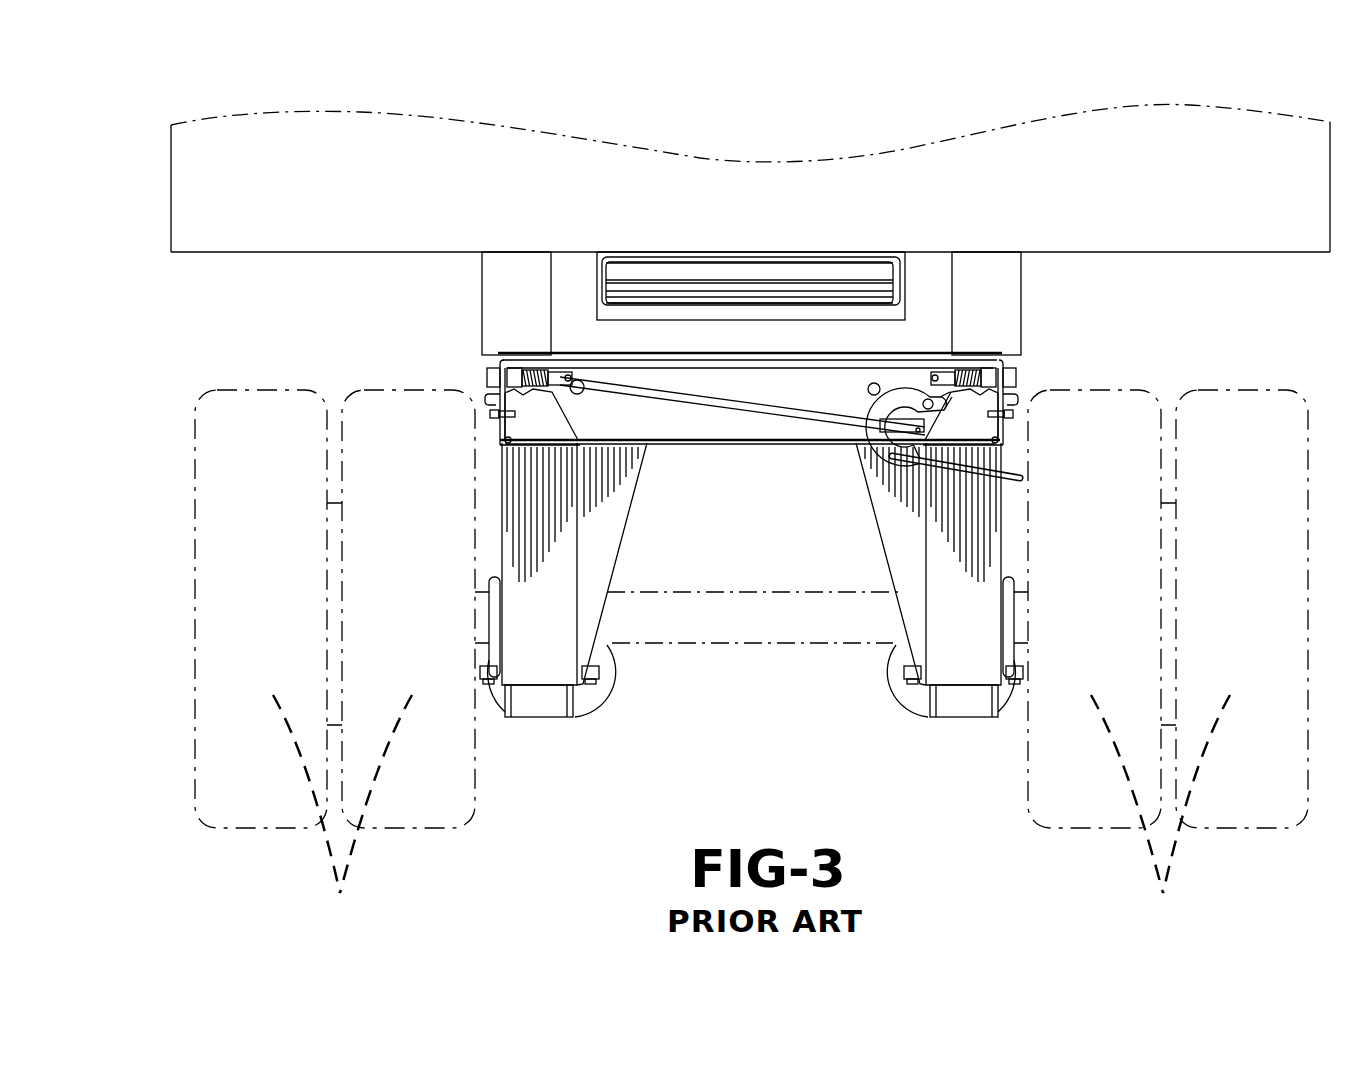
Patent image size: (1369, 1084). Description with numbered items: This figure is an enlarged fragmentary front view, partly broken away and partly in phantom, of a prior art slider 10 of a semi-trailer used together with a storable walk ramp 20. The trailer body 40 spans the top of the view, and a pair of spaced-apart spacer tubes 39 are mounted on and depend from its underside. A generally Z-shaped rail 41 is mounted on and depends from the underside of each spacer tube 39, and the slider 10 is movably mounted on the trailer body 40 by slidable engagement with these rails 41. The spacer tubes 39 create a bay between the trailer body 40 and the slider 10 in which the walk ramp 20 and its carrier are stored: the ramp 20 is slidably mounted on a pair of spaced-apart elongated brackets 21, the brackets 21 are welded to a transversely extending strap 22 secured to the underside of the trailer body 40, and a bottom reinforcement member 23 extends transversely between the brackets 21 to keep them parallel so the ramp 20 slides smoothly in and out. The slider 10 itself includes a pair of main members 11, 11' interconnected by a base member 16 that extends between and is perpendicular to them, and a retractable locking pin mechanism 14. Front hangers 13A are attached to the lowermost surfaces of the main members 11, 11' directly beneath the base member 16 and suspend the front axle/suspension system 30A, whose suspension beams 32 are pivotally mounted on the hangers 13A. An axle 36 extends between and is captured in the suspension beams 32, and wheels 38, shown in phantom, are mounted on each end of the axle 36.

The slider 10 is at (1152, 320).
The main member 11 is at (994, 430).
The main member 11' is at (482, 431).
The front hanger 13A is at (656, 490).
The retractable locking pin mechanism 14 is at (714, 408).
The base member 16 is at (779, 441).
The walk ramp 20 is at (695, 290).
The bracket 21 is at (598, 275).
The strap 22 is at (781, 256).
The bottom reinforcement member 23 is at (838, 318).
The front axle/suspension system 30A is at (534, 735).
The suspension beam 32 is at (556, 698).
The axle 36 is at (752, 612).
The wheel 38 is at (751, 665).
The spacer tube 39 is at (524, 293).
The trailer body 40 is at (366, 135).
The Z-shaped rail 41 is at (504, 367).